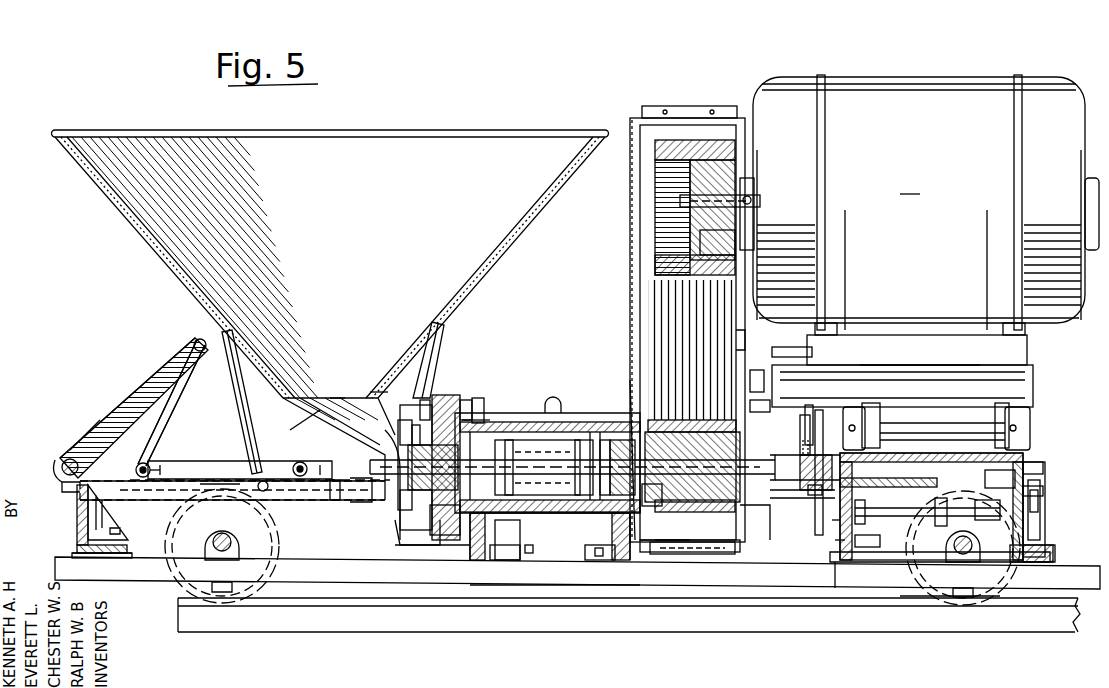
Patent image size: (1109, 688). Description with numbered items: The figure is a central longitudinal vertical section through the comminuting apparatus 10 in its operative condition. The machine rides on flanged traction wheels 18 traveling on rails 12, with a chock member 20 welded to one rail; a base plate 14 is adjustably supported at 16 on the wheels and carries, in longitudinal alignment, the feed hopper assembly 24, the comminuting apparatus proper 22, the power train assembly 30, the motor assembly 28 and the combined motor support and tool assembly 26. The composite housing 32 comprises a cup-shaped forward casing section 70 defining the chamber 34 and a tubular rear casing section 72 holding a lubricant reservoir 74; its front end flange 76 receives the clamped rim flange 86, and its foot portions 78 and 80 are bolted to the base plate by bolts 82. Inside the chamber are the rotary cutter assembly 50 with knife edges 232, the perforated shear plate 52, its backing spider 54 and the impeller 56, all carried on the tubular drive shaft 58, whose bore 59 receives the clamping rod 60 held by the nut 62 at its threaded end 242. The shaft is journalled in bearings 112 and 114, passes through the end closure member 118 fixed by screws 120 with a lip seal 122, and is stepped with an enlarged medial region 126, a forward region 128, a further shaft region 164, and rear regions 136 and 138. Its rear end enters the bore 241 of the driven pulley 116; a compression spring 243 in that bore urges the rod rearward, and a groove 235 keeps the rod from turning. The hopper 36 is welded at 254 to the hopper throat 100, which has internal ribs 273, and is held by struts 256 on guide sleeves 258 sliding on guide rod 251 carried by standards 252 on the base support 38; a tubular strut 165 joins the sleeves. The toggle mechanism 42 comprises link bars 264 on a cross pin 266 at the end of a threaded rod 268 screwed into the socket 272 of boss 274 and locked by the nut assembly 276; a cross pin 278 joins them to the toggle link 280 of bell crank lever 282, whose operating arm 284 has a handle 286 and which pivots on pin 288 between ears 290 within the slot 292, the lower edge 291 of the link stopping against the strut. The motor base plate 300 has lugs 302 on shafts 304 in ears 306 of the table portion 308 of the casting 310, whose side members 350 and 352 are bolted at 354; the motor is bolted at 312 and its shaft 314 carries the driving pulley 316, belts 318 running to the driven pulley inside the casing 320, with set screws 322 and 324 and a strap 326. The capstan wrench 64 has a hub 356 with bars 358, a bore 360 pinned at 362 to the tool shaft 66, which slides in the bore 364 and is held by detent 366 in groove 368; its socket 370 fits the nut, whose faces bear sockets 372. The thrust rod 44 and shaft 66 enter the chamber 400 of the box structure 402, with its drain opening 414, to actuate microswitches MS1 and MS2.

The comminuting apparatus 10 is at (151, 96).
The rails 12 is at (712, 620).
The base plate 14 is at (385, 590).
The adjustable support 16 is at (190, 572).
The flanged traction wheels 18 is at (226, 596).
The chock member 20 is at (906, 608).
The comminuting and emulsifying apparatus proper 22 is at (511, 408).
The feed hopper assembly 24 is at (343, 421).
The combined motor support and manipulating tool assembly 26 is at (1064, 438).
The motor assembly 28 is at (927, 393).
The power train assembly 30 is at (620, 252).
The composite housing 32 is at (462, 395).
The internal chamber 34 is at (432, 535).
The feed hopper 36 is at (386, 142).
The base support 38 is at (68, 542).
The toggle joint mechanism 42 is at (112, 381).
The thrust rod 44 is at (990, 530).
The rotary cutter assembly 50 is at (402, 418).
The perforated shear plate 52 is at (430, 548).
The backing spider 54 is at (428, 398).
The impeller 56 is at (424, 420).
The tubular rotary drive shaft 58 is at (548, 513).
The axial bore 59 is at (652, 495).
The clamping rod 60 is at (790, 455).
The nut 62 is at (803, 472).
The tool unit 64 is at (815, 504).
The tool shaft 66 is at (1000, 485).
The forward casing section 70 is at (462, 398).
The rear casing section 72 is at (530, 422).
The lubricant reservoir 74 is at (575, 420).
The front end flange 76 is at (492, 395).
The front foot portion 78 is at (496, 560).
The rear foot portion 80 is at (600, 592).
The fastening bolts 82 is at (628, 570).
The peripheral rim flange 86 is at (478, 396).
The hopper throat 100 is at (303, 419).
The anti-friction bearing 112 is at (520, 539).
The anti-friction bearing 114 is at (592, 560).
The pulley 116 is at (755, 407).
The end closure member 118 is at (605, 438).
The screws 120 is at (622, 438).
The lip type seal 122 is at (574, 473).
The medial region 126 is at (521, 473).
The stepped region 128 is at (572, 462).
The stepped region 136 is at (592, 425).
The stepped region 138 is at (670, 556).
The hub 164 is at (441, 520).
The tubular strut 165 is at (252, 495).
The cutting edge 232 is at (635, 380).
The longitudinal groove 235 is at (750, 352).
The axial bore 241 is at (695, 555).
The threaded end 242 is at (776, 379).
The helical compression spring 243 is at (770, 500).
The guide rod 251 is at (170, 500).
The standards 252 is at (76, 528).
The weld 254 is at (380, 380).
The supporting struts 256 is at (245, 378).
The guide sleeves 258 is at (295, 502).
The dual link assembly 264 is at (222, 460).
The cross pin 266 is at (268, 492).
The threaded rod 268 is at (310, 462).
The socket 272 is at (338, 397).
The raised ribs 273 is at (390, 500).
The boss 274 is at (360, 505).
The nut and washer assembly 276 is at (336, 502).
The cross pin 278 is at (152, 462).
The toggle link 280 is at (120, 446).
The bell crank lever 282 is at (101, 405).
The operating arm 284 is at (170, 362).
The manipulating handle 286 is at (196, 340).
The pivot pin 288 is at (66, 458).
The ears 290 is at (62, 488).
The lower edge 291 is at (125, 484).
The rectangular slot 292 is at (55, 470).
The motor base plate 300 is at (922, 362).
The depending lugs 302 is at (872, 402).
The supporting shafts 304 is at (935, 364).
The supporting ears 306 is at (850, 406).
The table portion 308 is at (998, 420).
The inverted box-like casting 310 is at (850, 590).
The bolts 312 is at (838, 328).
The motor shaft 314 is at (690, 205).
The driving pulley 316 is at (680, 175).
The driving belts 318 is at (657, 321).
The sheet metal casing 320 is at (690, 255).
The set screw 322 is at (720, 178).
The set screw 324 is at (752, 520).
The connecting strap 326 is at (760, 362).
The side member 350 is at (835, 560).
The side member 352 is at (1028, 600).
The bolts 354 is at (905, 545).
The hub 356 is at (827, 535).
The operating bars 358 is at (830, 530).
The axial bore 360 is at (818, 490).
The pin 362 is at (825, 418).
The elongated bore 364 is at (868, 506).
The spring pressed detent 366 is at (918, 432).
The annular groove 368 is at (925, 500).
The socket 370 is at (790, 443).
The sockets 372 is at (790, 432).
The chamber 400 is at (1045, 528).
The sheet metal box-like structure 402 is at (1040, 504).
The opening 414 is at (1050, 548).
The microswitch MS1 is at (1043, 468).
The microswitch MS2 is at (1043, 492).